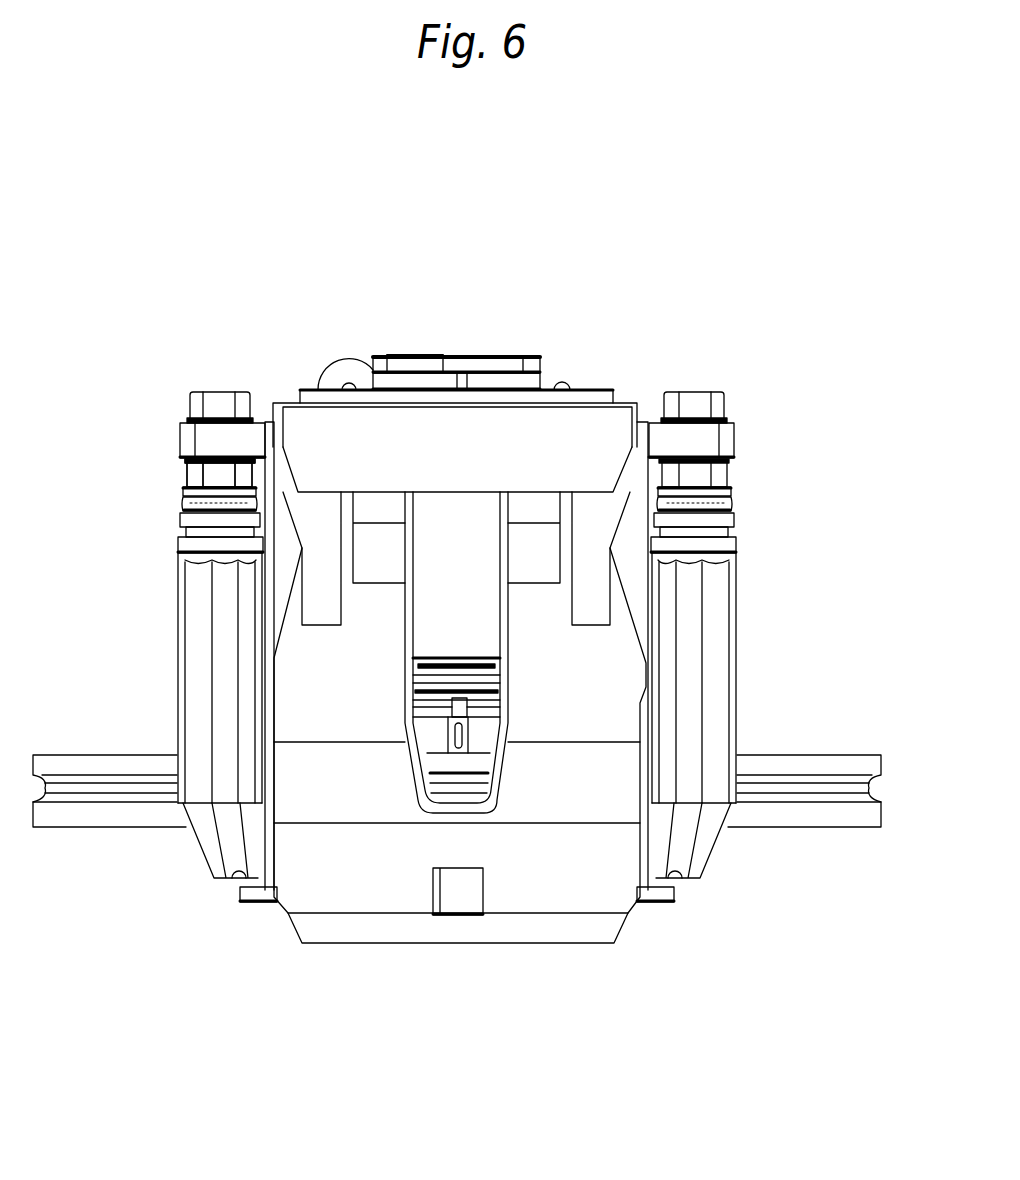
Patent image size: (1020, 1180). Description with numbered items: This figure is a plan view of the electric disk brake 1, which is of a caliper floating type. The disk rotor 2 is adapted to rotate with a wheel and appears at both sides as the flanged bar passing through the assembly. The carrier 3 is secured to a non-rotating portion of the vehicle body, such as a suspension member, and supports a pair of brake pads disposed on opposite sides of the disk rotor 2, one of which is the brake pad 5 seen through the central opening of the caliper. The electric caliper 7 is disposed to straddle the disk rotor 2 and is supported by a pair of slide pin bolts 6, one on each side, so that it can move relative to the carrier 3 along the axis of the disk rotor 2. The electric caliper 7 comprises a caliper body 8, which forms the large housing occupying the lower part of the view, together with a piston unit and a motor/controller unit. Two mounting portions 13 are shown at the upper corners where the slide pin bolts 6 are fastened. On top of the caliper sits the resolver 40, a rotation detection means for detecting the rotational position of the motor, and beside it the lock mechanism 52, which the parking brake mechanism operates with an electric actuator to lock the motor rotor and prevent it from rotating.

The electric disk brake 1 is at (580, 270).
The disk rotor 2 is at (847, 768).
The carrier 3 is at (713, 637).
The brake pad 5 is at (433, 738).
The slide pin bolt 6 is at (190, 473).
The electric caliper 7 is at (448, 950).
The caliper body 8 is at (565, 897).
The mounting portion 13 is at (185, 433).
The resolver 40 is at (412, 353).
The lock mechanism 52 is at (336, 366).